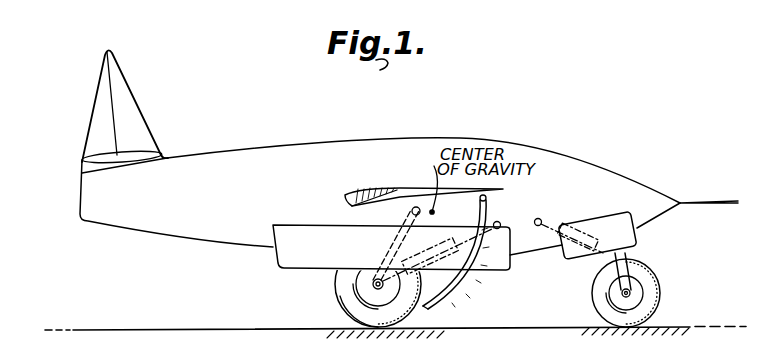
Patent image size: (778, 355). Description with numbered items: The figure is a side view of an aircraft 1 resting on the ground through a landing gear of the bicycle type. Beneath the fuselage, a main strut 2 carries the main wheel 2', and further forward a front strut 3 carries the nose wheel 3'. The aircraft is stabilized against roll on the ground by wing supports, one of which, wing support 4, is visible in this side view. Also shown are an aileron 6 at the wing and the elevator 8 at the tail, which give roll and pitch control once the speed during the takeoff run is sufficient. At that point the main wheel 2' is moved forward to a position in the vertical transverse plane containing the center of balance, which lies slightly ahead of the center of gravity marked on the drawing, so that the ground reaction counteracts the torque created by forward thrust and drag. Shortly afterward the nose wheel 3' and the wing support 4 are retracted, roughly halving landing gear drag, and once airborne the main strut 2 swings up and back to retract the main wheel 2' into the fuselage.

The aircraft 1 is at (283, 156).
The main strut 2 is at (398, 267).
The main wheel 2' is at (336, 311).
The front strut 3 is at (604, 250).
The nose wheel 3' is at (645, 293).
The wing support 4 is at (446, 293).
The aileron 6 is at (391, 190).
The elevator 8 is at (105, 157).